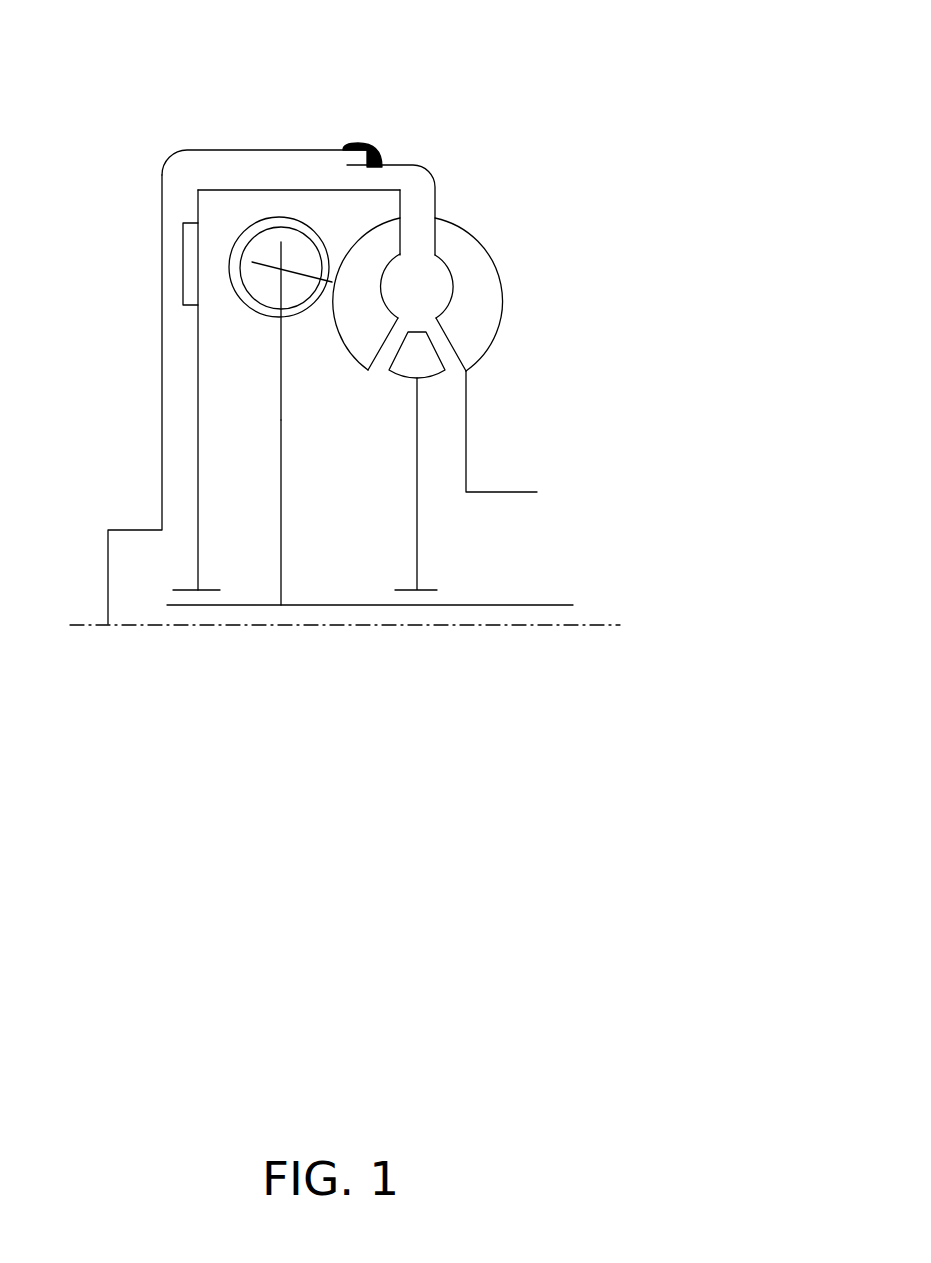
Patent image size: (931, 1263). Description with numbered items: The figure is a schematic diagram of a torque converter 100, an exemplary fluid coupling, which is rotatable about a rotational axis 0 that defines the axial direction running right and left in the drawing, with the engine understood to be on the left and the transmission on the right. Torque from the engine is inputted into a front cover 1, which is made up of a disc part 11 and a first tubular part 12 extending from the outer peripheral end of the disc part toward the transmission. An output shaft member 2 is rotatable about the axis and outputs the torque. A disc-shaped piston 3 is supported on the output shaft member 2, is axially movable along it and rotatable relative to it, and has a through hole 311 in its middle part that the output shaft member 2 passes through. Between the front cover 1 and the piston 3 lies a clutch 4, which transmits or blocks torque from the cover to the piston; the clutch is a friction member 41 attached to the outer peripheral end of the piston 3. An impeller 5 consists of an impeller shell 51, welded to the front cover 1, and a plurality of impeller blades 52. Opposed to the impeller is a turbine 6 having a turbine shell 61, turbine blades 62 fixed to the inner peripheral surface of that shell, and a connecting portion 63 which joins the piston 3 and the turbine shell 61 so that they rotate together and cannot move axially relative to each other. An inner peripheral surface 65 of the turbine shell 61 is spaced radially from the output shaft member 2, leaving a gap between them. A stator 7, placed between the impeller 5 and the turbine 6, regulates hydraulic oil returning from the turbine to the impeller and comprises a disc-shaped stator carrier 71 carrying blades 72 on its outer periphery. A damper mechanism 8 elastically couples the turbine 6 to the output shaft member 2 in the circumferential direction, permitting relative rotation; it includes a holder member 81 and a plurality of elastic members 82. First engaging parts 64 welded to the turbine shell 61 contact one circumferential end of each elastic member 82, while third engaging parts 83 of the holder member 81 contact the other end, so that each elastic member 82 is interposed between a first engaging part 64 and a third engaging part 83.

The torque converter 100 is at (462, 85).
The rotational axis 0 is at (595, 626).
The front cover 1 is at (206, 343).
The disc part 11 is at (160, 323).
The first tubular part 12 is at (222, 149).
The output shaft member 2 is at (313, 604).
The piston 3 is at (243, 369).
The through hole 311 is at (188, 593).
The clutch 4 is at (133, 188).
The friction member 41 is at (184, 243).
The impeller 5 is at (445, 311).
The impeller shell 51 is at (460, 217).
The impeller blades 52 is at (473, 263).
The turbine 6 is at (388, 265).
The turbine shell 61 is at (335, 340).
The turbine blades 62 is at (367, 282).
The connecting portion 63 is at (276, 189).
The first engaging parts 64 is at (292, 272).
The inner peripheral surface 65 is at (366, 374).
The stator 7 is at (434, 461).
The stator carrier 71 is at (418, 533).
The blades 72 is at (428, 372).
The damper mechanism 8 is at (285, 326).
The holder member 81 is at (279, 552).
The elastic members 82 is at (300, 312).
The third engaging parts 83 is at (280, 288).